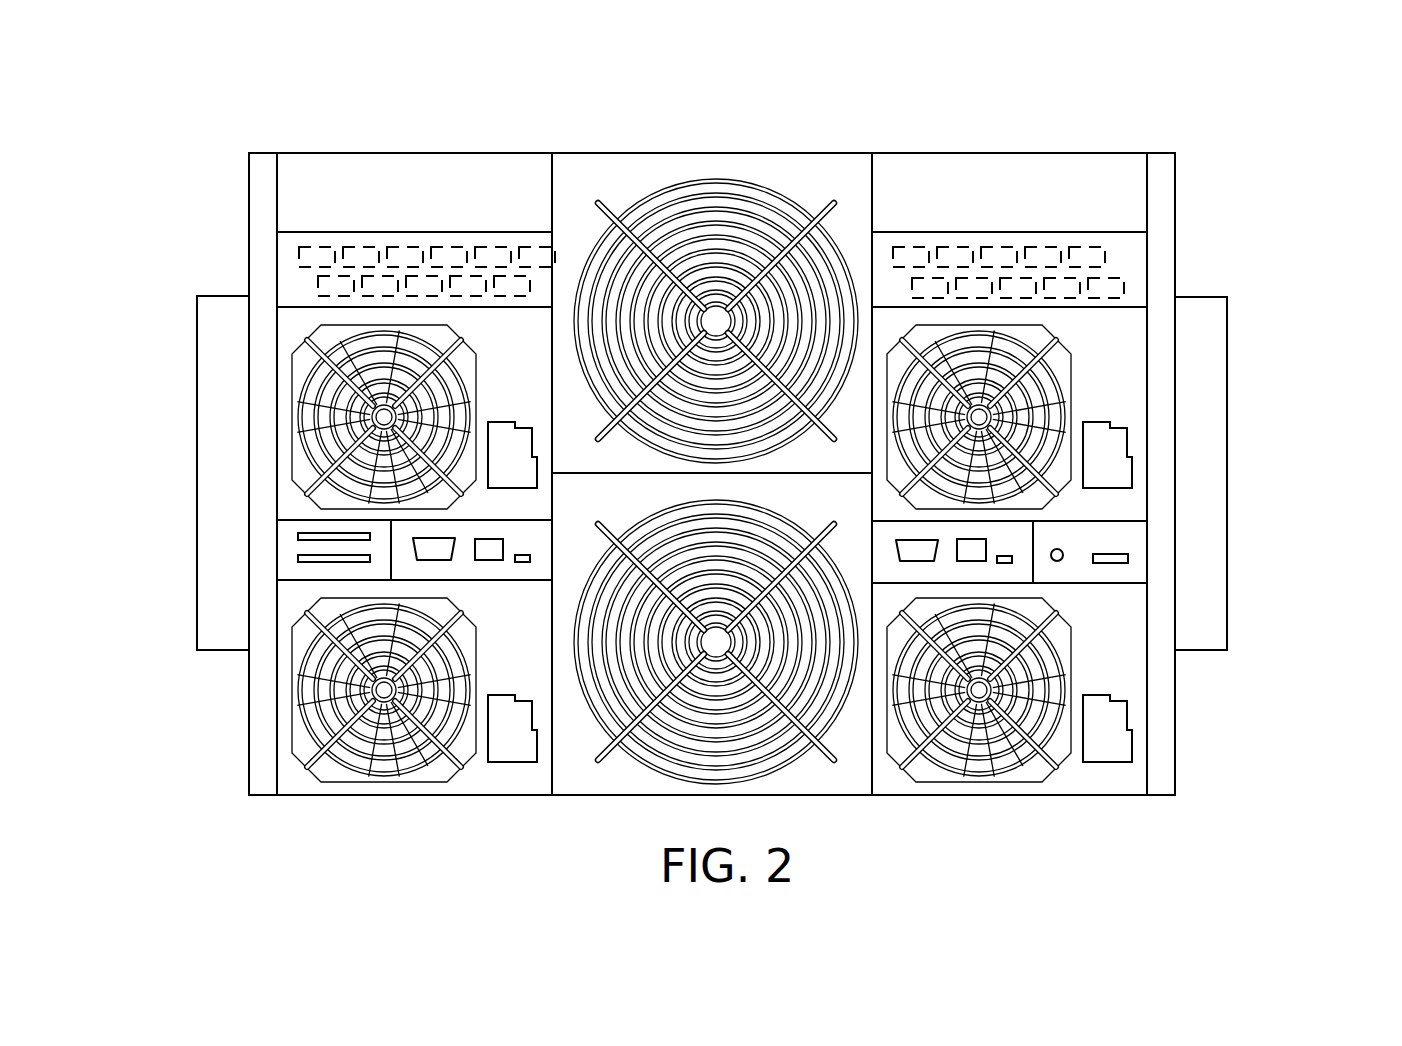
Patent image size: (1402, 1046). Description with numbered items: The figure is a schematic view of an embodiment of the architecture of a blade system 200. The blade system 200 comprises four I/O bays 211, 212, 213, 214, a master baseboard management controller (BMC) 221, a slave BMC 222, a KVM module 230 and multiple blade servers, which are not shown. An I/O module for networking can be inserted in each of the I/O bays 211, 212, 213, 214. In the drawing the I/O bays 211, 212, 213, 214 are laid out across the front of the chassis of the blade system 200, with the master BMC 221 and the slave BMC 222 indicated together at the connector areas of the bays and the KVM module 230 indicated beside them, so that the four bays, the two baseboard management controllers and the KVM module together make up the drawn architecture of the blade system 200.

The blade system 200 is at (107, 51).
The I/O bay 211 is at (1103, 152).
The I/O bay 212 is at (510, 152).
The I/O bay 213 is at (1012, 283).
The I/O bay 214 is at (418, 282).
The master baseboard management controller 221 is at (443, 537).
The slave BMC 222 is at (1272, 472).
The KVM module 230 is at (1127, 543).